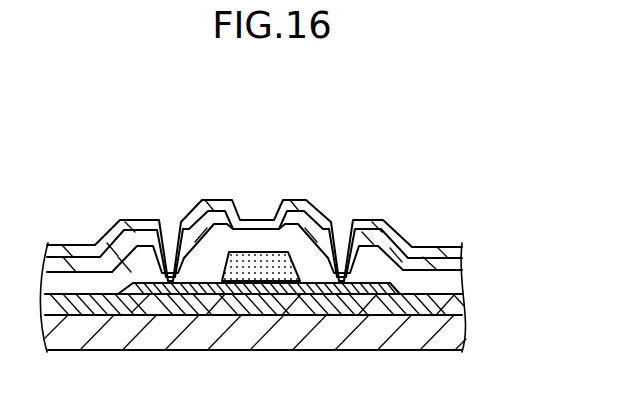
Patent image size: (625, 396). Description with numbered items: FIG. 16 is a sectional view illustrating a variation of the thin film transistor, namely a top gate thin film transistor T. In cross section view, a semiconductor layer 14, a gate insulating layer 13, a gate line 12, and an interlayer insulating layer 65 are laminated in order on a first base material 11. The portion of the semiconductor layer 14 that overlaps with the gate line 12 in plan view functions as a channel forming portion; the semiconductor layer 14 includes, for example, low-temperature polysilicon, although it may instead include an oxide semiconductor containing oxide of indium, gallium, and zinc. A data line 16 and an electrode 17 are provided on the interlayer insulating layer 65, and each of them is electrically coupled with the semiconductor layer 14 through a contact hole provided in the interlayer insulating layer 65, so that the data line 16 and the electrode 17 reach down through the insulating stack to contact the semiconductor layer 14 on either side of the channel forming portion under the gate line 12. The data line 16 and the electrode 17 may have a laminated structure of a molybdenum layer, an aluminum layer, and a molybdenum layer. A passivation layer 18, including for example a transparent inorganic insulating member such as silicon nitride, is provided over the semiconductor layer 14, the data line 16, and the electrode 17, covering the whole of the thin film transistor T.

The first base material 11 is at (458, 332).
The gate line 12 is at (257, 266).
The gate insulating layer 13 is at (460, 305).
The semiconductor layer 14 is at (322, 268).
The data line 16 is at (83, 262).
The electrode 17 is at (405, 263).
The passivation layer 18 is at (219, 208).
The interlayer insulating layer 65 is at (452, 281).
The thin film transistor T is at (405, 168).